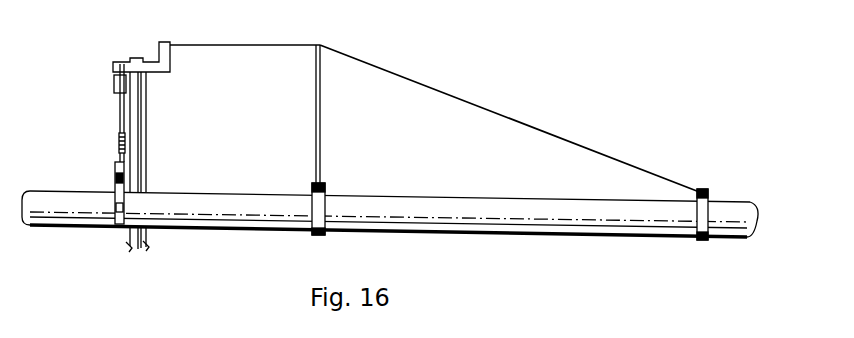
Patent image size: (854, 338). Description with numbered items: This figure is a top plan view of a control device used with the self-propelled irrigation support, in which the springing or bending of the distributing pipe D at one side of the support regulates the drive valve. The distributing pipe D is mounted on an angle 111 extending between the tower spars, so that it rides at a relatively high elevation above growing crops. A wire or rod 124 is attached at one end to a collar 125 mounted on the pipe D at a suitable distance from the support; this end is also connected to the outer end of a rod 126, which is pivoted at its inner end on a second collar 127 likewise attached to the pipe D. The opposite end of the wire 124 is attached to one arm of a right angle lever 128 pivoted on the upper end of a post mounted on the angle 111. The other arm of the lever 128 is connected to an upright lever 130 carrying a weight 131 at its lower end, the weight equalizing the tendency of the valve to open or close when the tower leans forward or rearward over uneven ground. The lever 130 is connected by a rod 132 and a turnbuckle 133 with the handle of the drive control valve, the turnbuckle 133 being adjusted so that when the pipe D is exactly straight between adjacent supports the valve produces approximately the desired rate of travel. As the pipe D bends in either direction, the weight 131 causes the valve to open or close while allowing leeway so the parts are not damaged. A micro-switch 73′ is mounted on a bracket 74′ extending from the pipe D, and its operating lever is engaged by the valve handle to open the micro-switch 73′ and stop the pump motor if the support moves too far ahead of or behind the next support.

The distributing pipe D is at (500, 197).
The angle 111 is at (142, 148).
The wire or rod 124 is at (205, 45).
The collar 125 is at (708, 193).
The rod 126 is at (321, 120).
The collar 127 is at (325, 188).
The right angle lever 128 is at (171, 67).
The upright lever 130 is at (118, 75).
The weight 131 is at (113, 85).
The rod 132 is at (120, 108).
The turnbuckle 133 is at (118, 143).
The bracket 74′ is at (115, 165).
The micro-switch 73′ is at (115, 178).